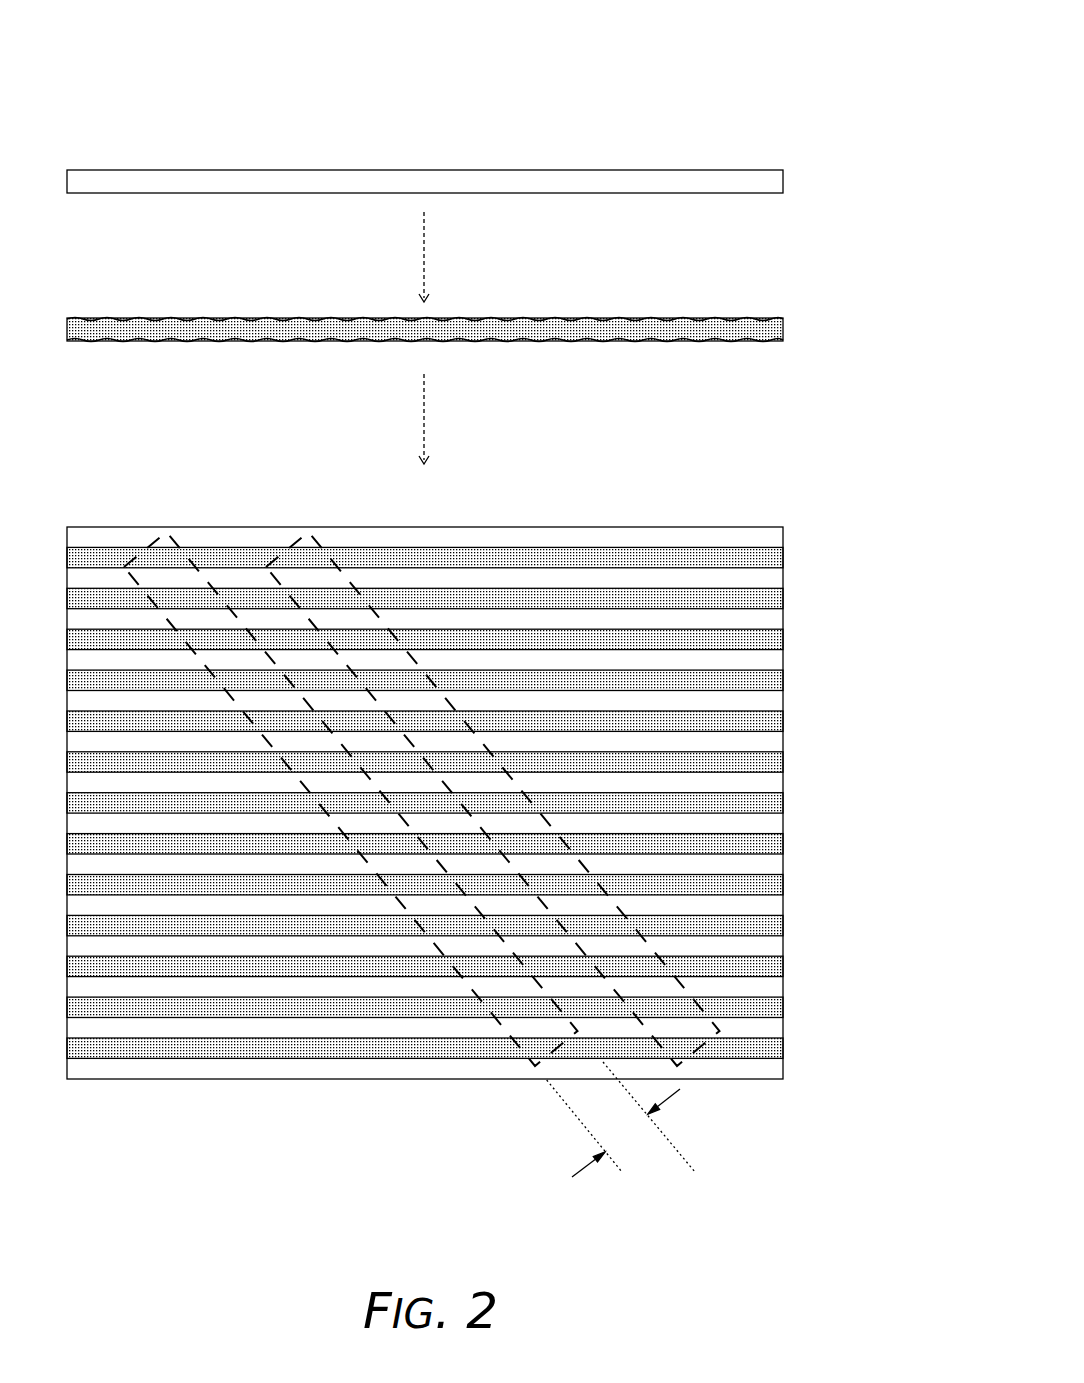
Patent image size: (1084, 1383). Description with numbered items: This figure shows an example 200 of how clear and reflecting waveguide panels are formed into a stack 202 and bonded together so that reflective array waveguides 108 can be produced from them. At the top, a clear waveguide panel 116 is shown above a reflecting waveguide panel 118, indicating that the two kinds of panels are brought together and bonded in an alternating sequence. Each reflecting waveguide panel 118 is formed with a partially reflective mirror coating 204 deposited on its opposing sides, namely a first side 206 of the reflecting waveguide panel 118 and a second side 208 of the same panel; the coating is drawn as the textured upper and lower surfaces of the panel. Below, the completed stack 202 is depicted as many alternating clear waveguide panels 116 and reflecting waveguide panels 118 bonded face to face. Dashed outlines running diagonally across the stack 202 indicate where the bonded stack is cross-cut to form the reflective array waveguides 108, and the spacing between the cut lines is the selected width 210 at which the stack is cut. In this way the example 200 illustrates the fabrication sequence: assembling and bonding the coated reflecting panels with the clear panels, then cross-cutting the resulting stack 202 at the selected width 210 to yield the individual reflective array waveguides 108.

The example 200 is at (722, 68).
The clear waveguide panels 116 is at (838, 189).
The reflecting waveguide panels 118 is at (838, 338).
The partially reflective mirror coating 204 is at (425, 329).
The first side 206 is at (658, 318).
The second side 208 is at (622, 343).
The stack 202 is at (624, 508).
The reflective array waveguides 108 is at (140, 553).
The selected width 210 is at (623, 1210).